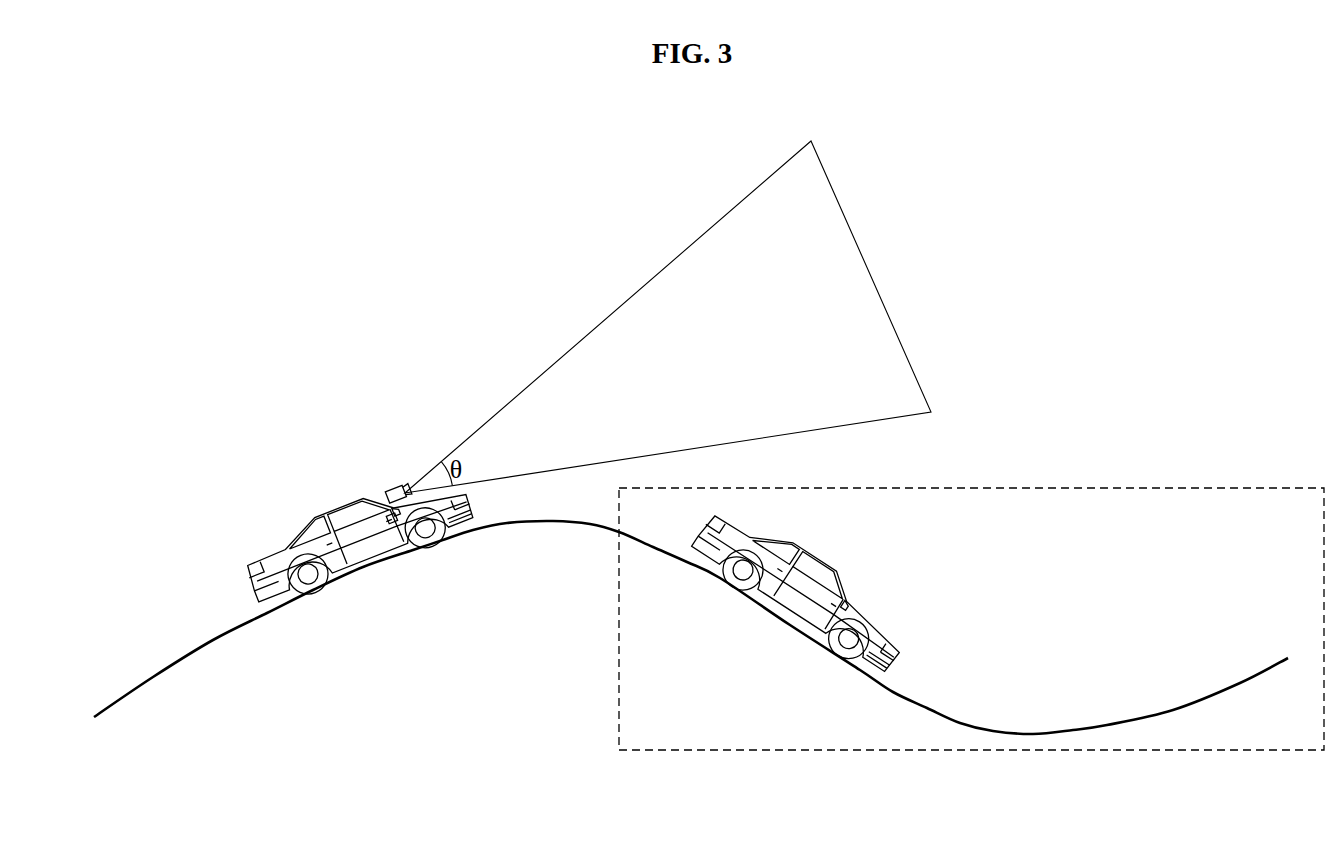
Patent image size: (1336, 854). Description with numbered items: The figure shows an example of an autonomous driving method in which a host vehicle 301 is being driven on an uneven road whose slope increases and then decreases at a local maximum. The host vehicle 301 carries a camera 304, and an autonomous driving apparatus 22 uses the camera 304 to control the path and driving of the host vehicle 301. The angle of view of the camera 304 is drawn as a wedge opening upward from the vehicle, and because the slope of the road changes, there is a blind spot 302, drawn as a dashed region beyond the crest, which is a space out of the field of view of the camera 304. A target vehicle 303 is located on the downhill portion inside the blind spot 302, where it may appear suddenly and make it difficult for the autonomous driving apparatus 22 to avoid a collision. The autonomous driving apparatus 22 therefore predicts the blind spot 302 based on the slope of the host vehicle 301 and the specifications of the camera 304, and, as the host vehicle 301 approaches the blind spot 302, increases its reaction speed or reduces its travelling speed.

The host vehicle 301 is at (288, 533).
The camera 304 is at (388, 490).
The autonomous driving apparatus 22 is at (403, 548).
The blind spot 302 is at (972, 488).
The target vehicle 303 is at (810, 552).